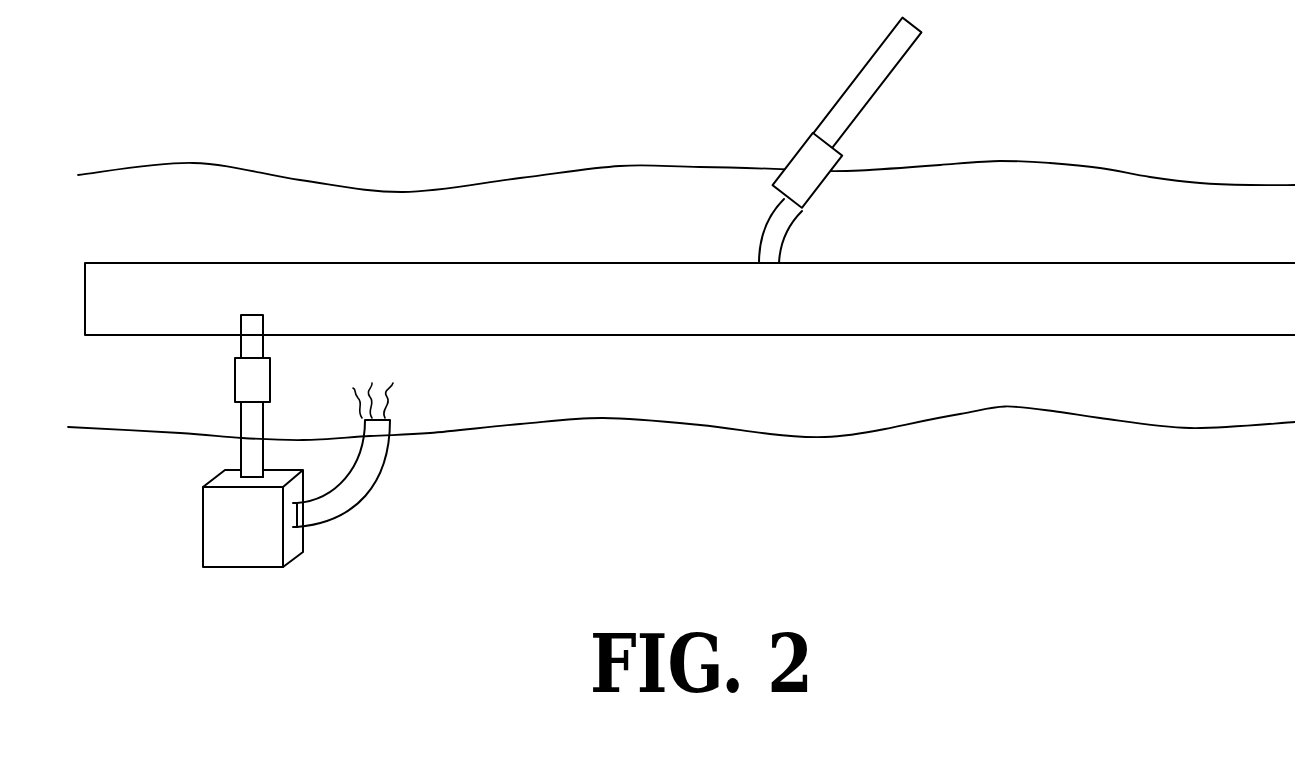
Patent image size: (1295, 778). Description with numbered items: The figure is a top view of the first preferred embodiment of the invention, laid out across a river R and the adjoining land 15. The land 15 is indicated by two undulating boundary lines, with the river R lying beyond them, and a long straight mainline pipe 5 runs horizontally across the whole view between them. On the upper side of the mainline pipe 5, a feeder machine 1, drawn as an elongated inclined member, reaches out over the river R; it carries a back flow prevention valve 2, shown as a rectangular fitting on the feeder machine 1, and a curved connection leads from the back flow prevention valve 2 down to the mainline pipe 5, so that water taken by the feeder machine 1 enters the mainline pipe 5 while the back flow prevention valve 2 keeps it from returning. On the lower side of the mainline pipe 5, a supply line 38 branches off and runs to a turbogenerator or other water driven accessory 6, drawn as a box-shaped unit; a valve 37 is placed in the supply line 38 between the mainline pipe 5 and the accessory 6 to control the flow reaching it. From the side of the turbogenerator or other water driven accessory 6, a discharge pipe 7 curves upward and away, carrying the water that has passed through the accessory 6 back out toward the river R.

The feeder machine 1 is at (858, 77).
The back flow prevention valve 2 is at (793, 156).
The mainline pipe 5 is at (615, 262).
The turbogenerator or other water driven accessory 6 is at (203, 525).
The discharge pipe 7 is at (365, 493).
The land 15 is at (410, 193).
The valve 37 is at (270, 377).
The supply line 38 is at (241, 420).
The river R is at (620, 166).